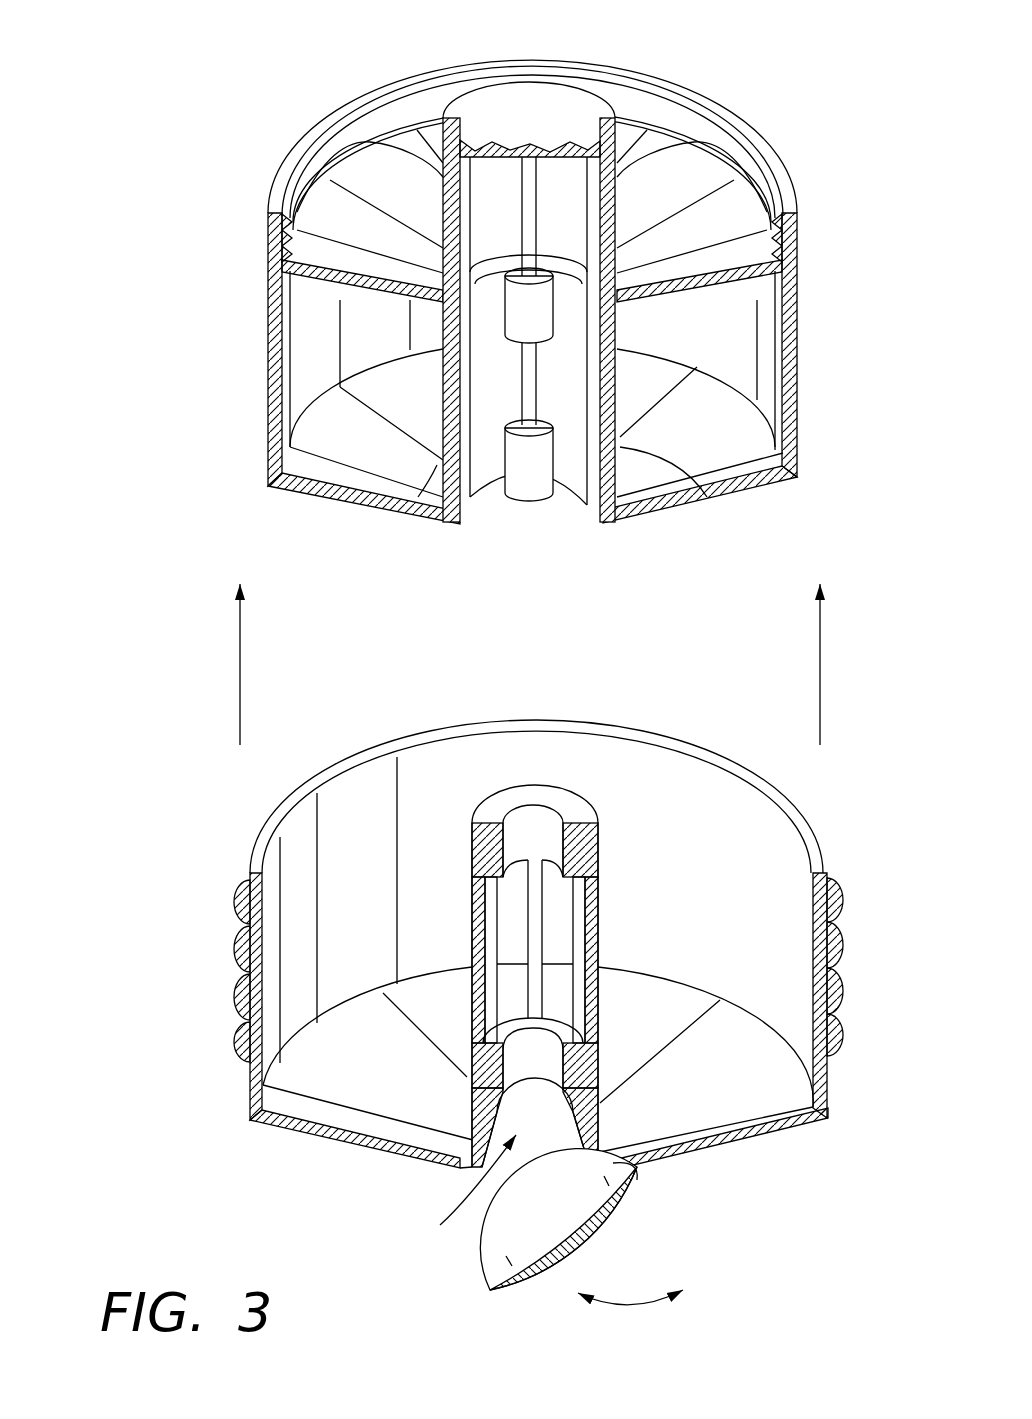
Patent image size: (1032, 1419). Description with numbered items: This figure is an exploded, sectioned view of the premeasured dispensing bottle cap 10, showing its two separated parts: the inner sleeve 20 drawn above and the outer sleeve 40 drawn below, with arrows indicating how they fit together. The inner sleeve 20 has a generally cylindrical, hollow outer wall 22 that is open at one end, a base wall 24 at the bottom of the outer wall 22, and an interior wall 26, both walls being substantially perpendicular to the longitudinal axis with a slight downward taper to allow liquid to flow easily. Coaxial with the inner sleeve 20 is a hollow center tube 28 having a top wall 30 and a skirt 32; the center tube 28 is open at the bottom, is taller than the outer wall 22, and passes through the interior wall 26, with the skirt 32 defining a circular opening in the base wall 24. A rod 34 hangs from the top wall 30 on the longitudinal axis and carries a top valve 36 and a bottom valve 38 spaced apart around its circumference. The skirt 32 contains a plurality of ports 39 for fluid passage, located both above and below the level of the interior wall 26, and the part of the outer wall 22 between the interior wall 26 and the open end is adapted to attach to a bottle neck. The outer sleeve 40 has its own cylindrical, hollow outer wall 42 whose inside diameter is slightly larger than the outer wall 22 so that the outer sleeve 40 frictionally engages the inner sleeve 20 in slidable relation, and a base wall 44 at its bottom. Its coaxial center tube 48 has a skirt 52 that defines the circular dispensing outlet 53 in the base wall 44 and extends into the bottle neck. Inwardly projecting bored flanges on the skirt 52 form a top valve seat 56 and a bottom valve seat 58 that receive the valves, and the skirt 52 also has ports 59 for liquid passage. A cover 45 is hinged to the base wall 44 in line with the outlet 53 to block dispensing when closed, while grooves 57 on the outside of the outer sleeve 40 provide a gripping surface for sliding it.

The bottle cap 10 is at (178, 597).
The inner sleeve 20 is at (477, 283).
The outer wall 22 is at (268, 402).
The base wall 24 is at (322, 496).
The interior wall 26 is at (740, 288).
The center tube 28 is at (460, 70).
The top wall 30 is at (618, 92).
The skirt 32 is at (432, 493).
The rod 34 is at (520, 405).
The top valve 36 is at (545, 318).
The bottom valve 38 is at (541, 496).
The ports 39 is at (348, 142).
The outer sleeve 40 is at (511, 989).
The outer wall 42 is at (655, 730).
The base wall 44 is at (378, 1147).
The cover 45 is at (612, 1237).
The center tube 48 is at (522, 785).
The skirt 52 is at (468, 1077).
The dispensing outlet 53 is at (470, 1224).
The top valve seat 56 is at (517, 841).
The grooves 57 is at (840, 922).
The bottom valve seat 58 is at (519, 1065).
The ports 59 is at (480, 937).